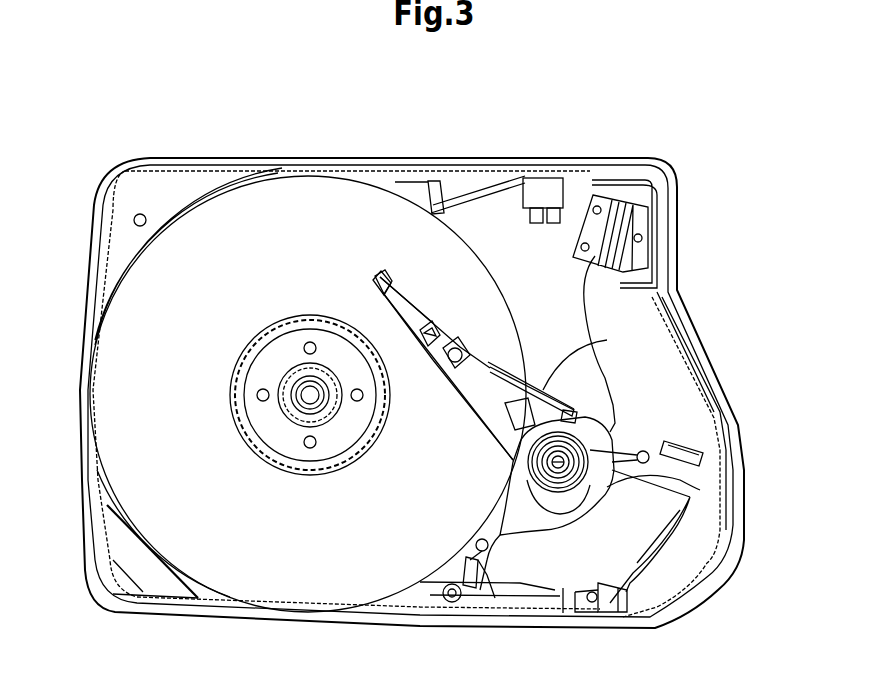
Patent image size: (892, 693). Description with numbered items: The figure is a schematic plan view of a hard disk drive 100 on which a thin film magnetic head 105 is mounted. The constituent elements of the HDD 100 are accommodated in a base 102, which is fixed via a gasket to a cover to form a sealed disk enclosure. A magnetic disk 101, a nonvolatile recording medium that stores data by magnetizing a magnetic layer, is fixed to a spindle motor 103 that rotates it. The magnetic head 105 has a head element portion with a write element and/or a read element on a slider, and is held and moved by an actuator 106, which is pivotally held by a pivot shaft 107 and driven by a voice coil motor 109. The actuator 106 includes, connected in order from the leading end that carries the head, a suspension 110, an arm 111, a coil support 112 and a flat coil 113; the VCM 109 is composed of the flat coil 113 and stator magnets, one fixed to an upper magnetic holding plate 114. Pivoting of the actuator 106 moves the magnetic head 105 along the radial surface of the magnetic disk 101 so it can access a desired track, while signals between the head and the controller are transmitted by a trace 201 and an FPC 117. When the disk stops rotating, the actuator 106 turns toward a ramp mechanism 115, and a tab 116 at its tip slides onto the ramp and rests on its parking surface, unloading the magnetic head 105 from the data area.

The hard disk drive 100 is at (410, 151).
The magnetic disk 101 is at (255, 161).
The base 102 is at (672, 207).
The spindle motor 103 is at (290, 443).
The thin film magnetic head 105 is at (378, 290).
The actuator 106 is at (548, 350).
The pivot shaft 107 is at (558, 462).
The voice coil motor 109 is at (686, 542).
The suspension 110 is at (413, 286).
The arm 111 is at (482, 409).
The coil support 112 is at (673, 447).
The flat coil 113 is at (700, 490).
The upper magnetic holding plate 114 is at (565, 590).
The ramp mechanism 115 is at (523, 160).
The tab 116 is at (372, 276).
The FPC 117 is at (543, 390).
The trace 201 is at (607, 370).